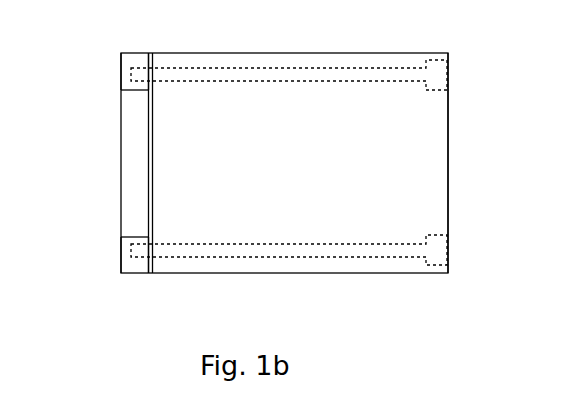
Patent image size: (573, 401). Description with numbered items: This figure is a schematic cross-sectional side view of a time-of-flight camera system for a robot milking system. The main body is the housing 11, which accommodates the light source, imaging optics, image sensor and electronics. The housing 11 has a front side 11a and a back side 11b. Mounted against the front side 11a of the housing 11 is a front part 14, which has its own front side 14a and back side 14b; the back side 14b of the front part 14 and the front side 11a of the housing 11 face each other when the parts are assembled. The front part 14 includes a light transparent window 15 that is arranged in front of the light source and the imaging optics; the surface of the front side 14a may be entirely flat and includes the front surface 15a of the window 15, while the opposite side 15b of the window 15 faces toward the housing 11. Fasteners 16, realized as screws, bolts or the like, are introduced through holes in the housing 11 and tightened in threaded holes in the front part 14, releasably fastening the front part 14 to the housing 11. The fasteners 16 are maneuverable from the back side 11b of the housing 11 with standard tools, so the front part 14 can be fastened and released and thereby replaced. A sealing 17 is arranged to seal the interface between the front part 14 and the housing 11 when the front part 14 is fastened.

The housing 11 is at (240, 273).
The first side wall of housing 11a is at (154, 158).
The back side of the housing 11b is at (448, 150).
The front part 14 is at (132, 274).
The front side of the front part 14a is at (122, 255).
The back side of the front part 14b is at (154, 192).
The light transparent window 15 is at (122, 100).
The front surface of the light transparent window 15a is at (120, 155).
The inner wall of second mounting section 15b is at (150, 127).
The fasteners 16 is at (358, 68).
The sealing 17 is at (150, 273).